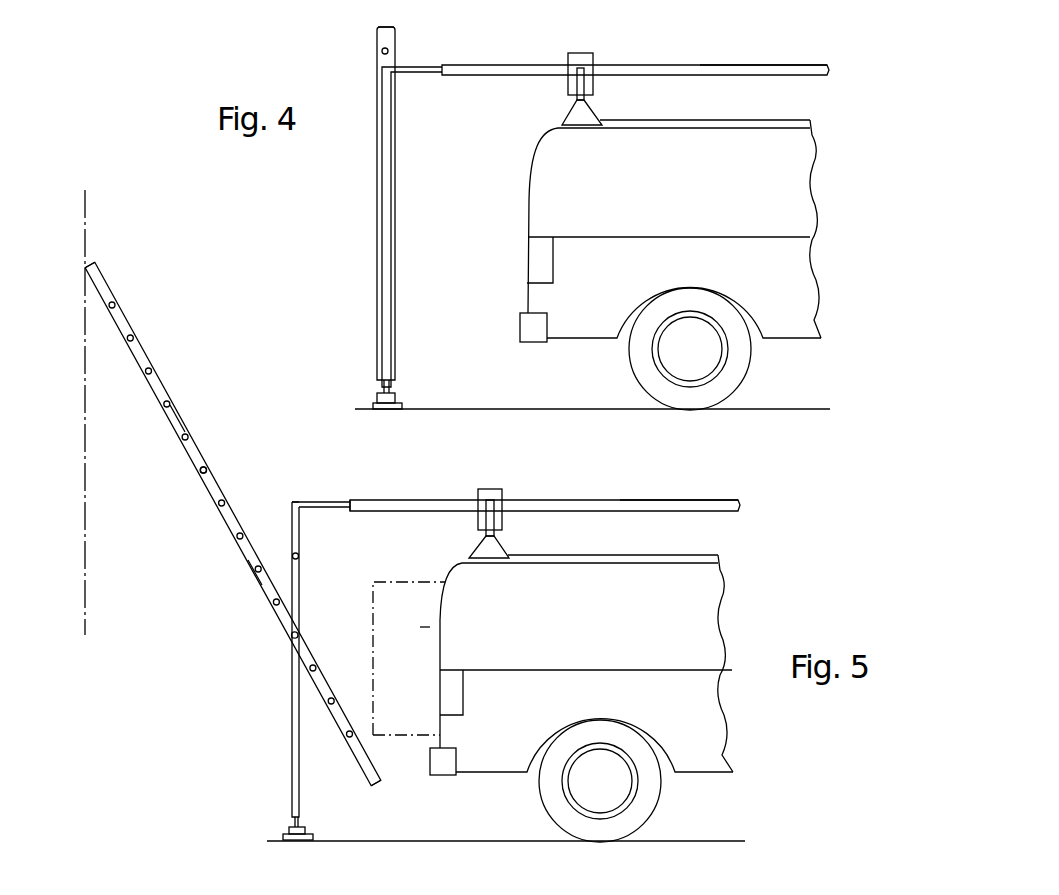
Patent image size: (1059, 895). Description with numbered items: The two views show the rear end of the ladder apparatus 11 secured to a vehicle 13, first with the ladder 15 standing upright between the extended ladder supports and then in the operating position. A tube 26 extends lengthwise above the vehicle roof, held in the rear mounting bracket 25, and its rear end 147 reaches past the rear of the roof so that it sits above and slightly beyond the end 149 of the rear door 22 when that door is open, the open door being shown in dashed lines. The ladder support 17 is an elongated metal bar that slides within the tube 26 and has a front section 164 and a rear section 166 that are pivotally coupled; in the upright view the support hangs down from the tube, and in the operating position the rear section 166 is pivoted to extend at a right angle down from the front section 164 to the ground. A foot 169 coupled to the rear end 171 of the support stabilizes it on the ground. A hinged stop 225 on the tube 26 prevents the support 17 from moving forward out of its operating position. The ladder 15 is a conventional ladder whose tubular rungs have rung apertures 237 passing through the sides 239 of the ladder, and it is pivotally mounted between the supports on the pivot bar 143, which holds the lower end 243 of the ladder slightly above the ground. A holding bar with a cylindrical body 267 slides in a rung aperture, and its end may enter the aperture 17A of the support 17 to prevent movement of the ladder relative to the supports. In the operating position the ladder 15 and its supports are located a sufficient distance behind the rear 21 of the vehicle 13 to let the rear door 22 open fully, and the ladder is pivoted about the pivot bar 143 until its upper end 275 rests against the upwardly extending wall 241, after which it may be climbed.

In FIG. 4, the ladder apparatus 11 is at (354, 191).
In FIG. 4, the vehicle 13 is at (815, 275).
In FIG. 5, the vehicle 13 is at (713, 617).
In FIG. 4, the ladder 15 is at (387, 26).
In FIG. 5, the ladder 15 is at (170, 390).
In FIG. 4, the ladder support 17 is at (420, 65).
In FIG. 5, the ladder support 17 is at (326, 501).
In FIG. 5, the aperture of the support 17A is at (293, 556).
In FIG. 5, the rear of the vehicle 21 is at (435, 718).
In FIG. 5, the rear door 22 is at (425, 627).
In FIG. 4, the rear mounting bracket 25 is at (588, 98).
In FIG. 5, the rear mounting bracket 25 is at (497, 537).
In FIG. 4, the tube 26 is at (800, 65).
In FIG. 5, the tube 26 is at (693, 500).
In FIG. 5, the pivot bar 143 is at (292, 637).
In FIG. 5, the rear end of the tube 147 is at (350, 500).
In FIG. 5, the end of the rear door 149 is at (373, 596).
In FIG. 5, the front section 164 is at (303, 502).
In FIG. 5, the rear section 166 is at (293, 713).
In FIG. 5, the foot 169 is at (305, 830).
In FIG. 5, the rear end of the ladder support 171 is at (288, 826).
In FIG. 4, the hinged stop 225 is at (518, 70).
In FIG. 5, the hinged stop 225 is at (417, 503).
In FIG. 4, the rung aperture 237 is at (378, 52).
In FIG. 5, the rung aperture 237 is at (205, 472).
In FIG. 4, the side of the ladder 239 is at (396, 38).
In FIG. 5, the side of the ladder 239 is at (180, 428).
In FIG. 5, the wall 241 is at (88, 478).
In FIG. 5, the lower end of the ladder 243 is at (378, 788).
In FIG. 5, the body of the holding bar 267 is at (252, 574).
In FIG. 5, the upper end of the ladder 275 is at (88, 258).